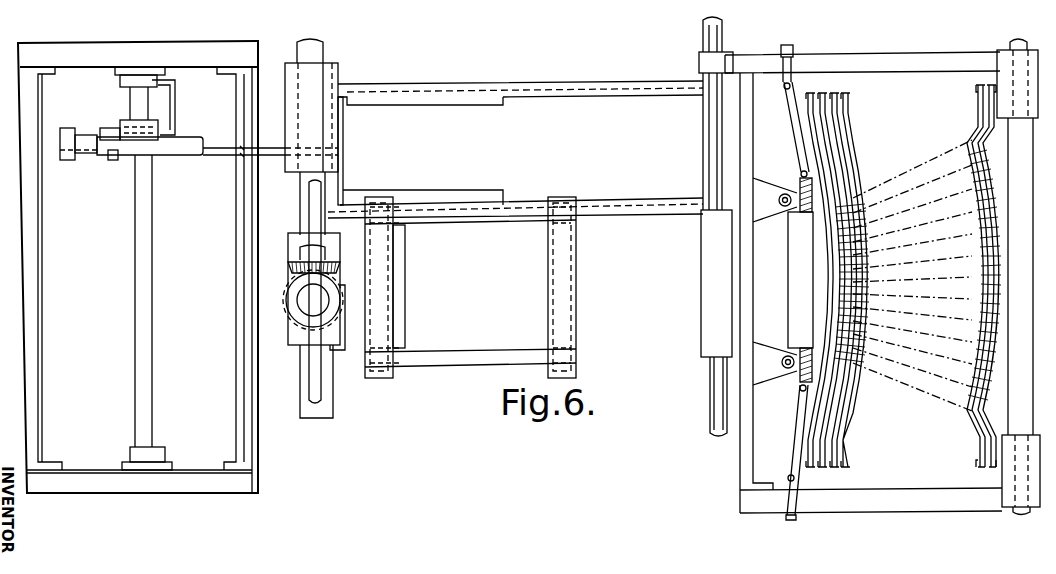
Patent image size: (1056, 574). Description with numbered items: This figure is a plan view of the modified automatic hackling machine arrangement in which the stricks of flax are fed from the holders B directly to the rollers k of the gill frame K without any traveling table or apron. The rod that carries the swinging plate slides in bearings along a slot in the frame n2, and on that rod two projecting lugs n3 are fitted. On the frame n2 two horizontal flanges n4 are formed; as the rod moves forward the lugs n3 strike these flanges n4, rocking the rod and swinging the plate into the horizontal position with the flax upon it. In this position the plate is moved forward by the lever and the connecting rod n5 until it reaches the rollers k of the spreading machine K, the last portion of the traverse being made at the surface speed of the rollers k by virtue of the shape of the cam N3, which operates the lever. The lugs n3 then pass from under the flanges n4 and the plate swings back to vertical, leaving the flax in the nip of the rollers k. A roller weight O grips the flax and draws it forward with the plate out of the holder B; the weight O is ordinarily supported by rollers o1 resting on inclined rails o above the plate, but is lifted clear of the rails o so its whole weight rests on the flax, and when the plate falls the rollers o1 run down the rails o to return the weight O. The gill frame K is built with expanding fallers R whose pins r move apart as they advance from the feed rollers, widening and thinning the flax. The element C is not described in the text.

The cam N3 is at (178, 148).
The connecting rod n5 is at (213, 148).
The projecting lugs n3 is at (344, 193).
The horizontal flanges n4 is at (431, 202).
The frame n2 is at (600, 207).
The roller weight O is at (408, 281).
The inclined rails o is at (445, 362).
The rollers o1 is at (395, 361).
The gear C is at (301, 291).
The holders B is at (300, 348).
The rollers k is at (756, 226).
The gill frame K is at (890, 393).
The expanding fallers R is at (840, 177).
The pins r is at (912, 275).